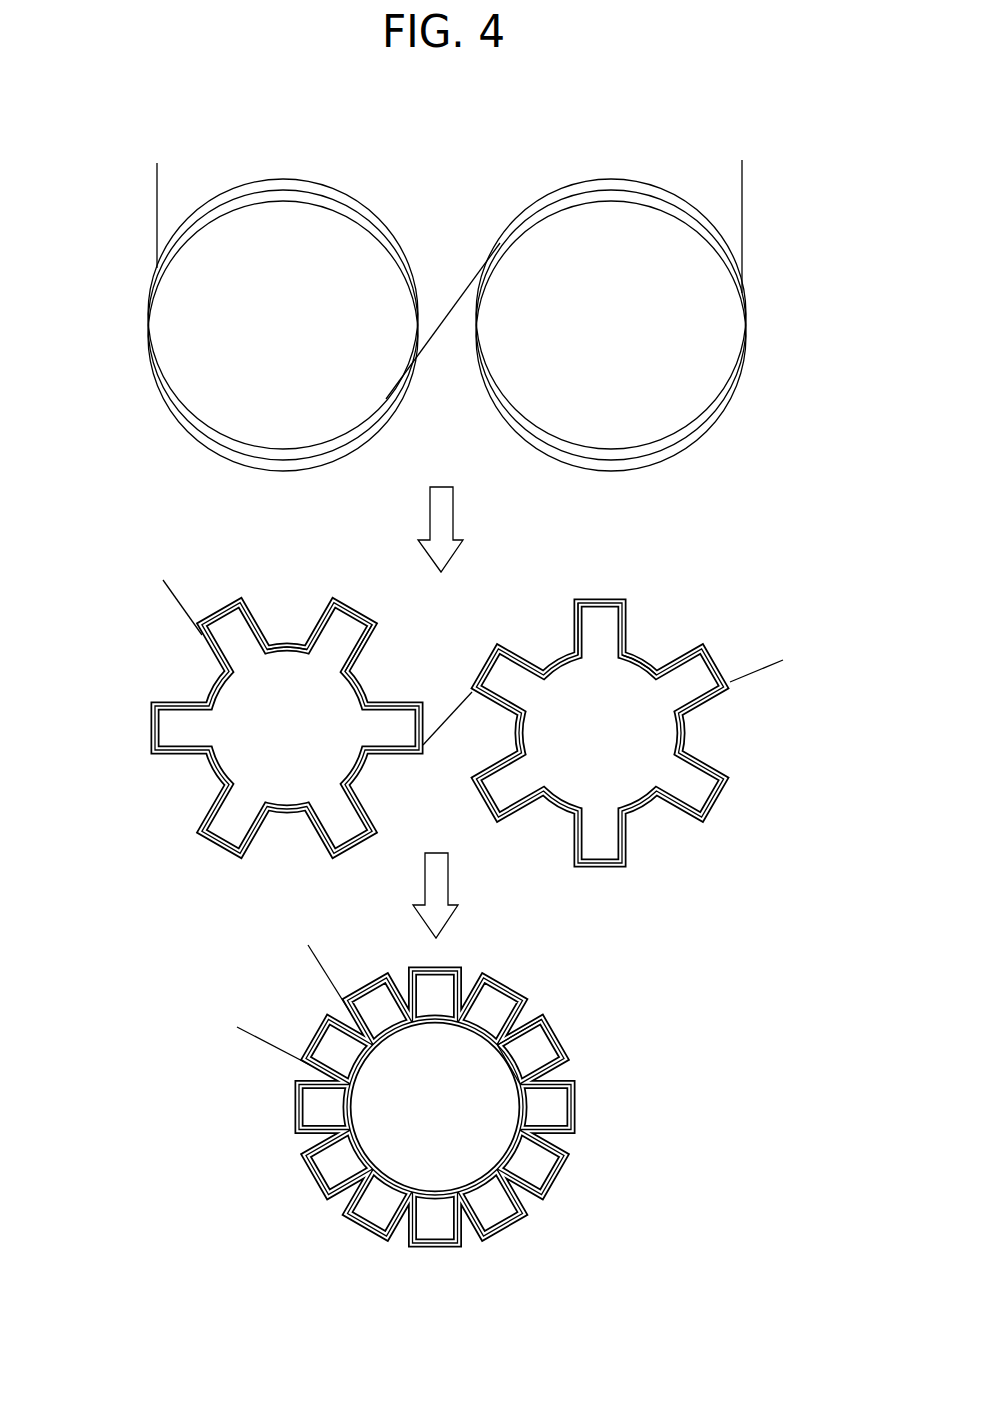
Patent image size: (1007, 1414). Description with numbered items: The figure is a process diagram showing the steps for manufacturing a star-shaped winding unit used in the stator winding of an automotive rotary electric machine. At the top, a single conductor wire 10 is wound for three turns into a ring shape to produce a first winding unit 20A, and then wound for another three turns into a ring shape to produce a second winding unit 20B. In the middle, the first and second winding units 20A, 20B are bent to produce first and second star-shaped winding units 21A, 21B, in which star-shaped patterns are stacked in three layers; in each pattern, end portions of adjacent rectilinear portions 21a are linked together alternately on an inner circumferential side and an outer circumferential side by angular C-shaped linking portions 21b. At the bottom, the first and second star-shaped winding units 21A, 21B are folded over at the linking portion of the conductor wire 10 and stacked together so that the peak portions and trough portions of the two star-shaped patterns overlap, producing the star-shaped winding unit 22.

The conductor wire 10 is at (153, 178).
The first winding unit 20A is at (363, 188).
The second winding unit 20B is at (522, 203).
The first star-shaped winding unit 21A is at (385, 667).
The second star-shaped winding unit 21B is at (660, 656).
The rectilinear portion 21a is at (337, 640).
The linking portion 21b is at (284, 651).
The star-shaped winding unit 22 is at (651, 1014).